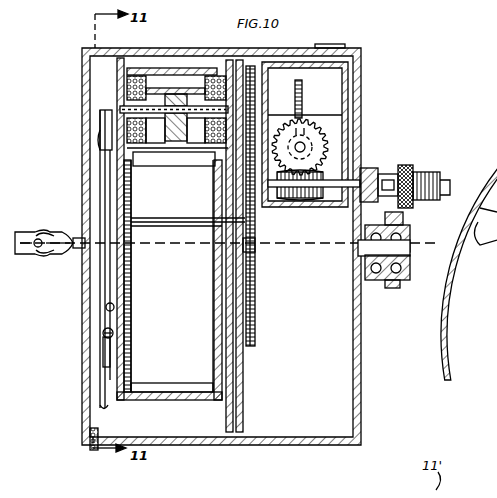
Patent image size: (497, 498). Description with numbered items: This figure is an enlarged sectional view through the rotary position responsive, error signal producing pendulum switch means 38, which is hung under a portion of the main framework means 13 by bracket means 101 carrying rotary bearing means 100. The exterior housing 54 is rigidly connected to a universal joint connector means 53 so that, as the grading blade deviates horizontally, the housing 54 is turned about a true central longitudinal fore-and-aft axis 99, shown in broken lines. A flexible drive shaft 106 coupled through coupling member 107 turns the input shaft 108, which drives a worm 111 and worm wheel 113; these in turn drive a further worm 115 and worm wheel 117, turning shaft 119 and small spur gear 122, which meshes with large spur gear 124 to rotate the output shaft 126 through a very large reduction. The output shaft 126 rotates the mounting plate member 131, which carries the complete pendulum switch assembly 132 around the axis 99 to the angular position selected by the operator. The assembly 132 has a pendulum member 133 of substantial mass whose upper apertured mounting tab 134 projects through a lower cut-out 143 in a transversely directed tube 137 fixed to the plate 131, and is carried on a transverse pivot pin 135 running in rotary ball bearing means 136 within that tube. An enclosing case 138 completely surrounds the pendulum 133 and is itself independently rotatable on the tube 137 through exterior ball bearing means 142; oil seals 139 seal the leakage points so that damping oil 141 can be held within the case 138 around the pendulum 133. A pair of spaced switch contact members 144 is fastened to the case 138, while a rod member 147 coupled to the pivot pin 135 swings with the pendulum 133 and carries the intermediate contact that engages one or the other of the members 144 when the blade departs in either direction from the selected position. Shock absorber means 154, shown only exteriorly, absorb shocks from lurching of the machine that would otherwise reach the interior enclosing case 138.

The rotary position responsive error signal producing pendulum switch means 38 is at (378, 54).
The universal joint means 53 is at (46, 226).
The exterior housing 54 is at (82, 418).
The longitudinal axis 99 is at (431, 250).
The rotary bearing means 100 is at (386, 280).
The bracket means 101 is at (403, 218).
The flexible drive shaft 106 is at (450, 185).
The coupling member 107 is at (405, 170).
The input shaft 108 is at (338, 188).
The worm 111 is at (284, 200).
The worm wheel 113 is at (318, 150).
The worm wheel 115 is at (330, 136).
The worm wheel 117 is at (322, 96).
The shaft 119 is at (335, 110).
The small spur gear 122 is at (246, 134).
The large spur gear 124 is at (252, 334).
The output shaft 126 is at (255, 250).
The pendulum switch assembly mounting plate member 131 is at (228, 432).
The pendulum switch assembly 132 is at (138, 416).
The pendulum member 133 is at (172, 376).
The upper apertured mounting tab portion 134 is at (182, 96).
The transversely directed pivot pin 135 is at (120, 108).
The rotary ball bearing means 136 is at (125, 92).
The transversely directed tube 137 is at (150, 90).
The enclosing case means 138 is at (120, 300).
The oil seals 139 is at (214, 118).
The damping oil or fluid 141 is at (110, 328).
The exterior ball bearing means 142 is at (222, 70).
The lower cut-out or aperture 143 is at (157, 130).
The spaced switch contact members 144 is at (98, 406).
The rod member 147 is at (105, 272).
The shock absorber means 154 is at (467, 268).
The main framework means 13 is at (469, 273).